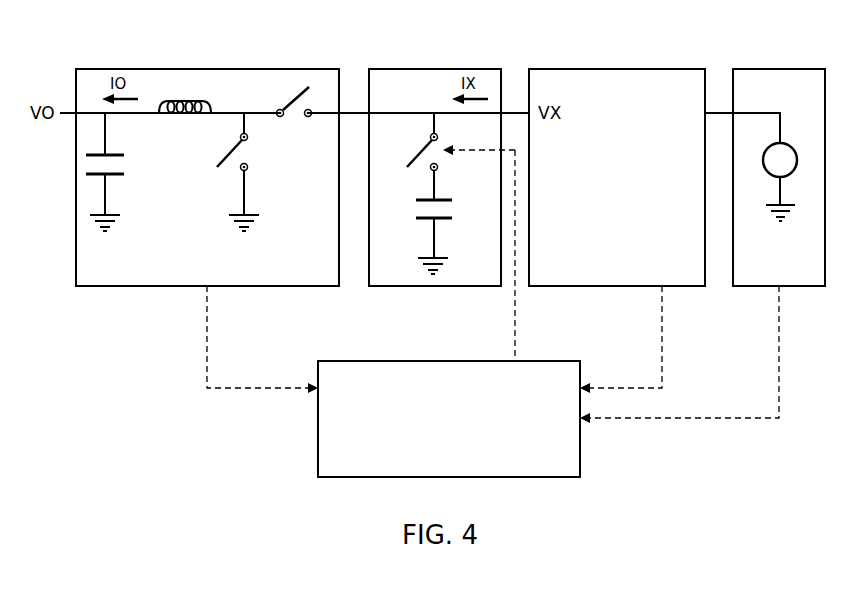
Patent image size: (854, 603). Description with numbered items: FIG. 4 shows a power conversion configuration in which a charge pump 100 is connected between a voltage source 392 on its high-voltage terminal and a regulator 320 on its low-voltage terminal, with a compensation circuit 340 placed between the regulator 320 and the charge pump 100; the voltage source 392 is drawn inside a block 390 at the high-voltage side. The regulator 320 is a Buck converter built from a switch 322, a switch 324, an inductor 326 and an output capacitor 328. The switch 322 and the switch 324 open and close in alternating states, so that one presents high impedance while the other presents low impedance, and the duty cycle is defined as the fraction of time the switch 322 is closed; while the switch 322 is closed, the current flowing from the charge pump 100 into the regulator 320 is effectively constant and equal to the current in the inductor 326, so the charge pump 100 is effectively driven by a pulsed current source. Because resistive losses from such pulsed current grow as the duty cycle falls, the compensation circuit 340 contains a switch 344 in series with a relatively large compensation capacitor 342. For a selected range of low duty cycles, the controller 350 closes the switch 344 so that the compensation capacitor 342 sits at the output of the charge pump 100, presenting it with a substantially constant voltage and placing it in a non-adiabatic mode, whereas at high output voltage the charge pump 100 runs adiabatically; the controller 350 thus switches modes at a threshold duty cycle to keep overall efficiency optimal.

The charge pump 100 is at (602, 211).
The regulator 320 is at (82, 287).
The switch 322 is at (288, 93).
The switch 324 is at (260, 152).
The inductor 326 is at (185, 93).
The output capacitor 328 is at (128, 165).
The compensation circuit 340 is at (403, 287).
The compensation capacitor 342 is at (444, 227).
The switch 344 is at (420, 145).
The controller 350 is at (434, 451).
The voltage source stage 390 is at (757, 290).
The voltage source 392 is at (795, 137).